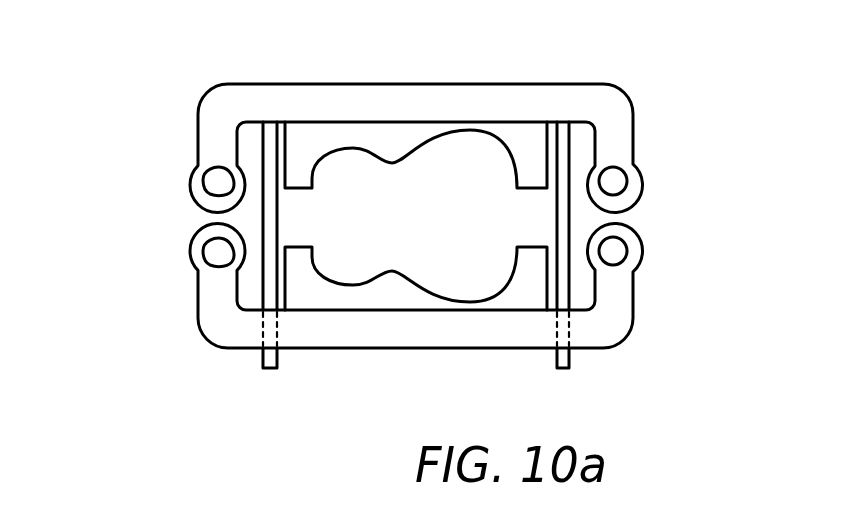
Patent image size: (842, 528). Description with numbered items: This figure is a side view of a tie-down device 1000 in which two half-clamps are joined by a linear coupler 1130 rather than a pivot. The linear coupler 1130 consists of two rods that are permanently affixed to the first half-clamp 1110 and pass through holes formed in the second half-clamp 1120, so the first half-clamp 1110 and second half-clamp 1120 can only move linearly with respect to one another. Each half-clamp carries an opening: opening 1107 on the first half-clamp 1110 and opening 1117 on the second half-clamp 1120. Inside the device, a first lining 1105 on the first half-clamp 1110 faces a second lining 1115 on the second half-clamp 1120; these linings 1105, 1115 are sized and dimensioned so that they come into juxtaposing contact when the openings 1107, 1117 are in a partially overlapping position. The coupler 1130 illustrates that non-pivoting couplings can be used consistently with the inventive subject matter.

The tie-down device 1000 is at (177, 97).
The first lining 1105 is at (302, 143).
The first half-clamp 1110 is at (612, 103).
The opening 1107 is at (617, 180).
The opening 1117 is at (617, 254).
The second half-clamp 1120 is at (617, 307).
The linear coupler 1130 is at (258, 355).
The second lining 1115 is at (318, 297).